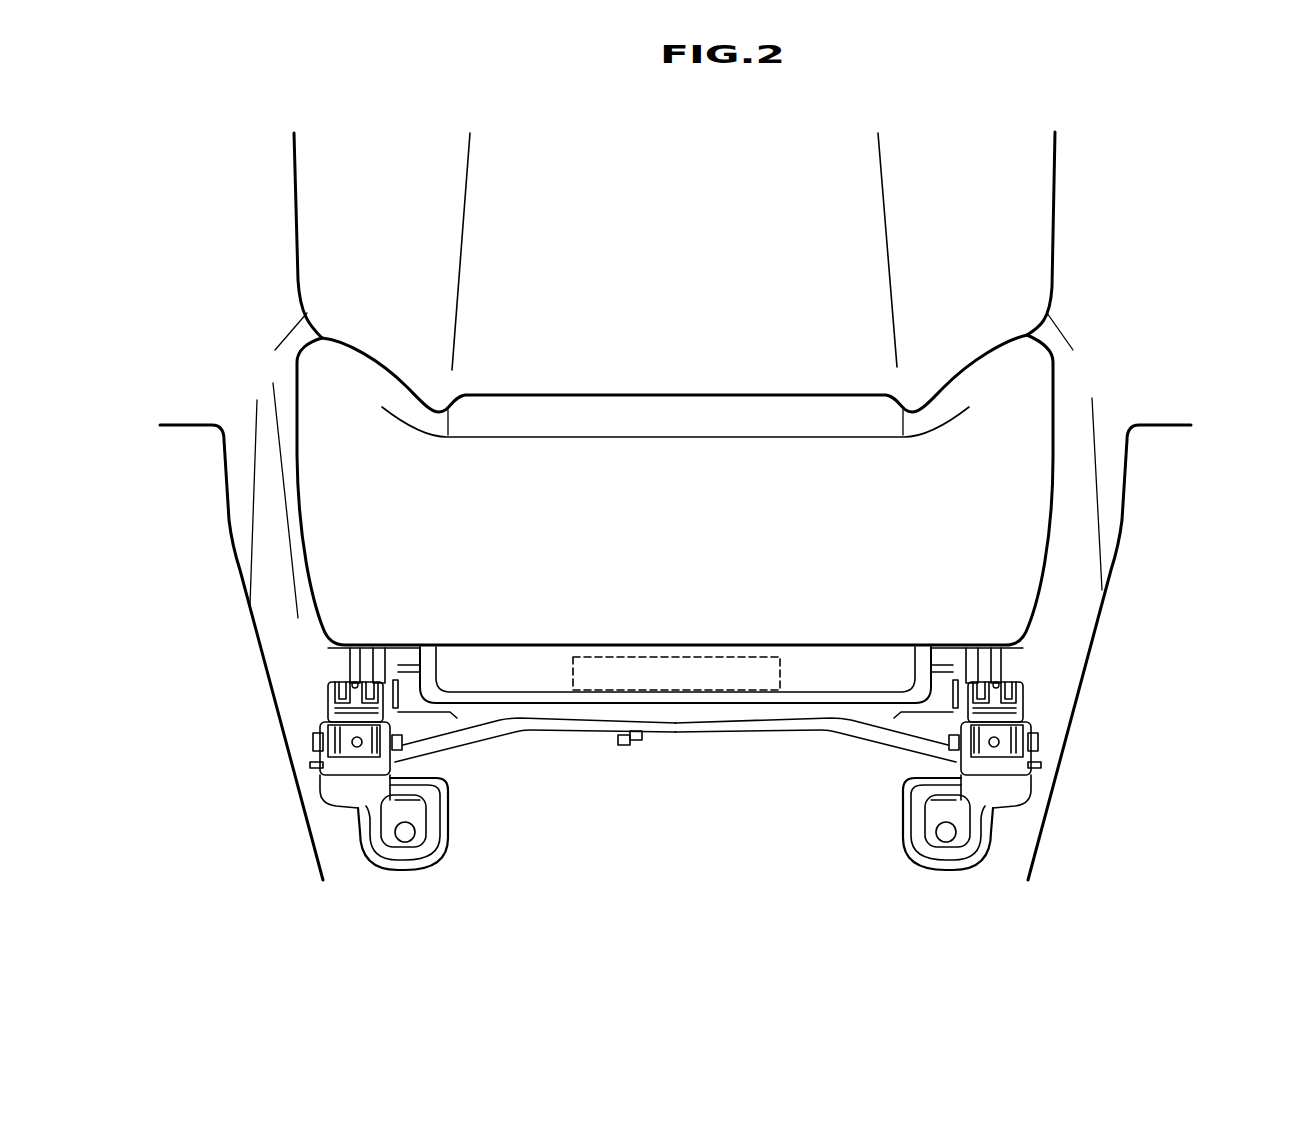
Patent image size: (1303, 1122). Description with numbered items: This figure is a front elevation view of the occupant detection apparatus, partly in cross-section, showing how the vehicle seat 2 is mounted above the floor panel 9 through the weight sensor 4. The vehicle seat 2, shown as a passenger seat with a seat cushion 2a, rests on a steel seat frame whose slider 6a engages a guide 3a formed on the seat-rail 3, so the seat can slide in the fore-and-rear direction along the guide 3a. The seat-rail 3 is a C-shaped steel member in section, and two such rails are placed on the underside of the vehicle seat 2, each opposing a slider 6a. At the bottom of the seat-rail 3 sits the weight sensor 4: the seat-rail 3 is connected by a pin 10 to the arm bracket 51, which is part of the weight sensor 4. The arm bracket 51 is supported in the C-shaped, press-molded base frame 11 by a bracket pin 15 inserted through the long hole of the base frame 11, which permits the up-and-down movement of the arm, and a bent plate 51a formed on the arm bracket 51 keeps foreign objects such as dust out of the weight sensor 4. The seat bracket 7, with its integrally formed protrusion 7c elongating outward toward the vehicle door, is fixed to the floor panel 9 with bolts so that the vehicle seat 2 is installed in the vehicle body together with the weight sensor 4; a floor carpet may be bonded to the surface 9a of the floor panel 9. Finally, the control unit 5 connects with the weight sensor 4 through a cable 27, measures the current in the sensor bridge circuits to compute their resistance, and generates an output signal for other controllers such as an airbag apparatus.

The vehicle seat 2 is at (1058, 182).
The seat cushion 2a is at (770, 400).
The floor panel 9 is at (1108, 450).
The seat-rail 3 is at (337, 653).
The pin 10 is at (330, 672).
The slider 6a is at (352, 683).
The guide 3a is at (338, 697).
The weight sensor 4 is at (328, 722).
The bracket pin 15 is at (311, 734).
The protrusion 7c is at (310, 764).
The arm bracket 51 is at (355, 760).
The bent plate 51a is at (357, 757).
The base frame 11 is at (360, 800).
The seat bracket 7 is at (405, 868).
The cable 27 is at (473, 737).
The surface 9a is at (653, 745).
The control unit 5 is at (742, 688).